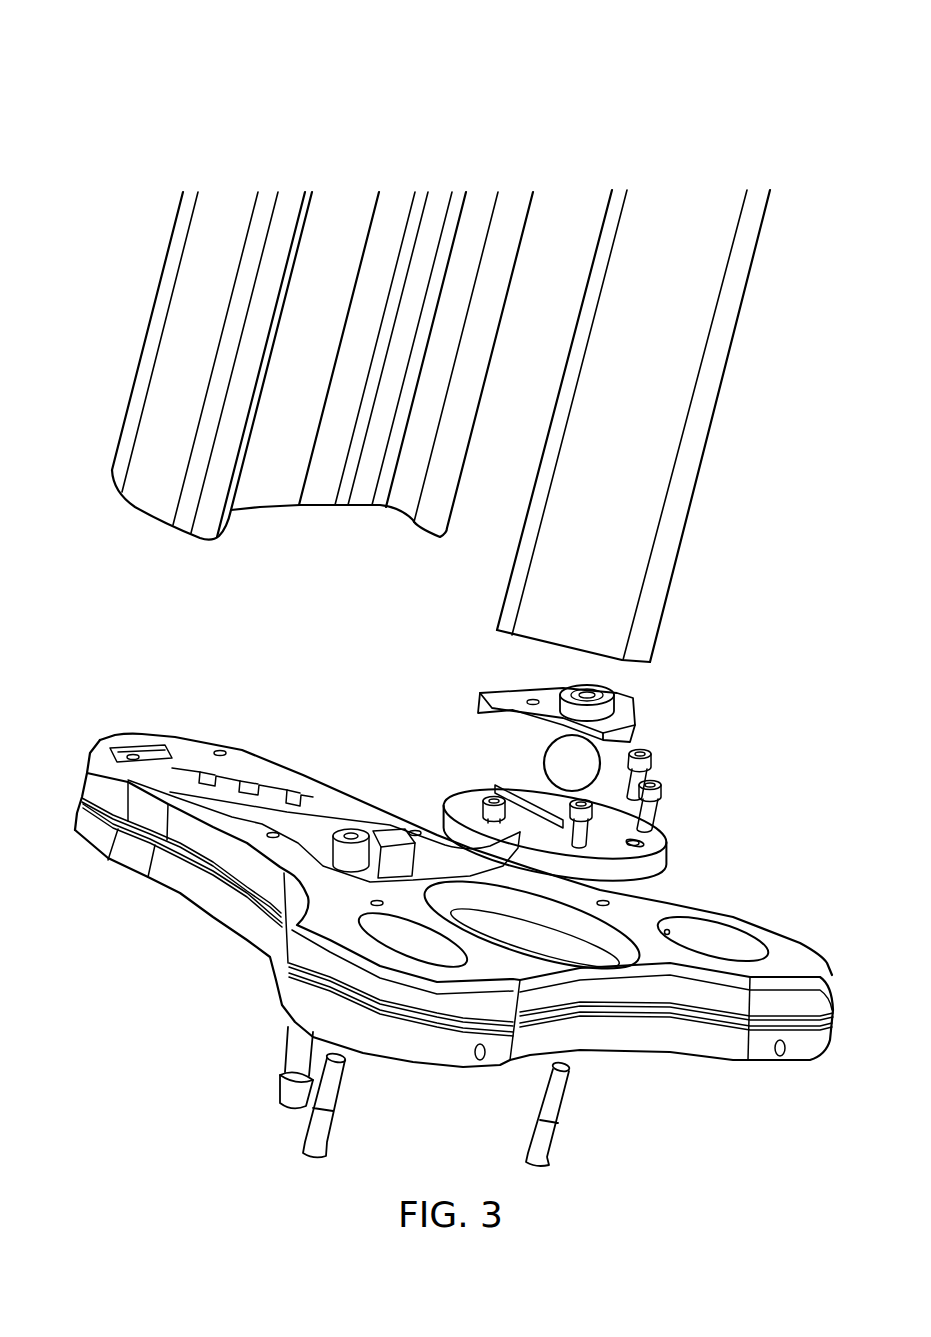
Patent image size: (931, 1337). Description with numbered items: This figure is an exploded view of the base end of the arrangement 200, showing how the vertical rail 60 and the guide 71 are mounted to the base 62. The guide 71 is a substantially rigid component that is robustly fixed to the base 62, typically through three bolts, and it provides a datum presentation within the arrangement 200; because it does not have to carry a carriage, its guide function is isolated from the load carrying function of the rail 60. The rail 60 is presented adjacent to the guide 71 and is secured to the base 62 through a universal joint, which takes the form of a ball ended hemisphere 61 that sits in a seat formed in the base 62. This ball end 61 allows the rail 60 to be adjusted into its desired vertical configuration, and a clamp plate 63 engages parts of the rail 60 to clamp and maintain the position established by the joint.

The arrangement 200 is at (471, 106).
The guide 71 is at (156, 293).
The rail 60 is at (645, 503).
The ball ended hemisphere 61 is at (542, 760).
The clamp plate 63 is at (660, 856).
The base 62 is at (697, 1040).